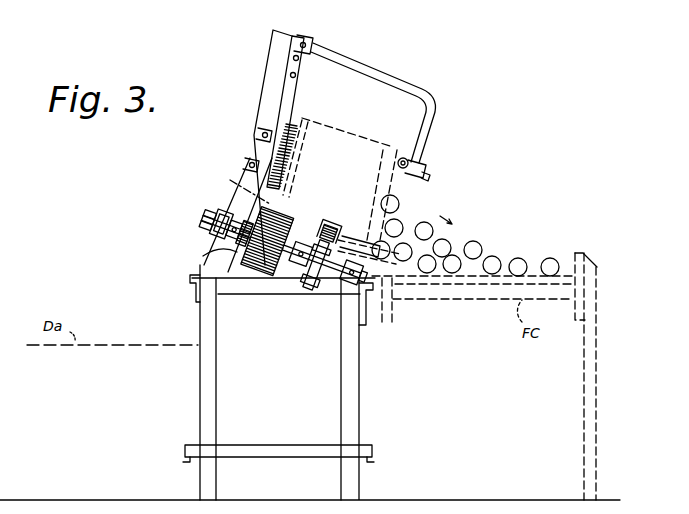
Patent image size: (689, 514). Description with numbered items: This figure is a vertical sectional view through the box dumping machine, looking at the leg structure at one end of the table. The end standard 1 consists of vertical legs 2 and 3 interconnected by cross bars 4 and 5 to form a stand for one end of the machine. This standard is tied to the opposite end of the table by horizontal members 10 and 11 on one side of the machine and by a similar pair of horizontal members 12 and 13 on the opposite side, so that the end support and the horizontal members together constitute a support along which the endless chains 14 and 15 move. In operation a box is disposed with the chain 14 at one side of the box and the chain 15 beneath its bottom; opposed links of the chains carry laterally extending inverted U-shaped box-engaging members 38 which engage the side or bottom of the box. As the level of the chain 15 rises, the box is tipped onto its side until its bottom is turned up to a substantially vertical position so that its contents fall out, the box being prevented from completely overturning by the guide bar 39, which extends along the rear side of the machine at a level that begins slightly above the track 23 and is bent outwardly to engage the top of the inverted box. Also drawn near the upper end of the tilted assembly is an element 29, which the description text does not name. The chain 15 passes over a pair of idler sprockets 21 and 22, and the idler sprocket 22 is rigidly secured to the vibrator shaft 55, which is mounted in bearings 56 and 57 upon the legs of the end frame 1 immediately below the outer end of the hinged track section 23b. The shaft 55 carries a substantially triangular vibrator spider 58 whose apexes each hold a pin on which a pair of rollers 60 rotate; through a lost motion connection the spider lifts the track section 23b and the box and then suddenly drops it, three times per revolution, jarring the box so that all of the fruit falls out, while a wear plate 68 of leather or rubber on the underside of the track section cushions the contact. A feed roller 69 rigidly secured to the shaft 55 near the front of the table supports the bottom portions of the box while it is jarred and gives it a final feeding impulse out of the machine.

The end standard 1 is at (367, 416).
The vertical leg 2 is at (213, 384).
The vertical leg 3 is at (345, 373).
The cross bar 4 is at (283, 446).
The cross bar 5 is at (276, 284).
The horizontal member 10 is at (192, 293).
The horizontal member 11 is at (189, 450).
The horizontal member 12 is at (366, 294).
The horizontal member 13 is at (374, 458).
The endless chain 14 is at (331, 231).
The endless chain 15 is at (248, 174).
The idler sprocket 21 is at (286, 122).
The idler sprocket 22 is at (205, 251).
The track 23 is at (322, 233).
The track section 23b is at (360, 236).
The handle bar 29 is at (278, 85).
The inverted U-shaped box-engaging member 38 is at (338, 230).
The guide bar 39 is at (412, 160).
The vibrator shaft 55 is at (202, 218).
The bearing 56 is at (222, 209).
The bearing 57 is at (349, 286).
The vibrator spider 58 is at (337, 283).
The roller 60 is at (309, 280).
The wear plate 68 is at (389, 235).
The feed roller 69 is at (250, 268).